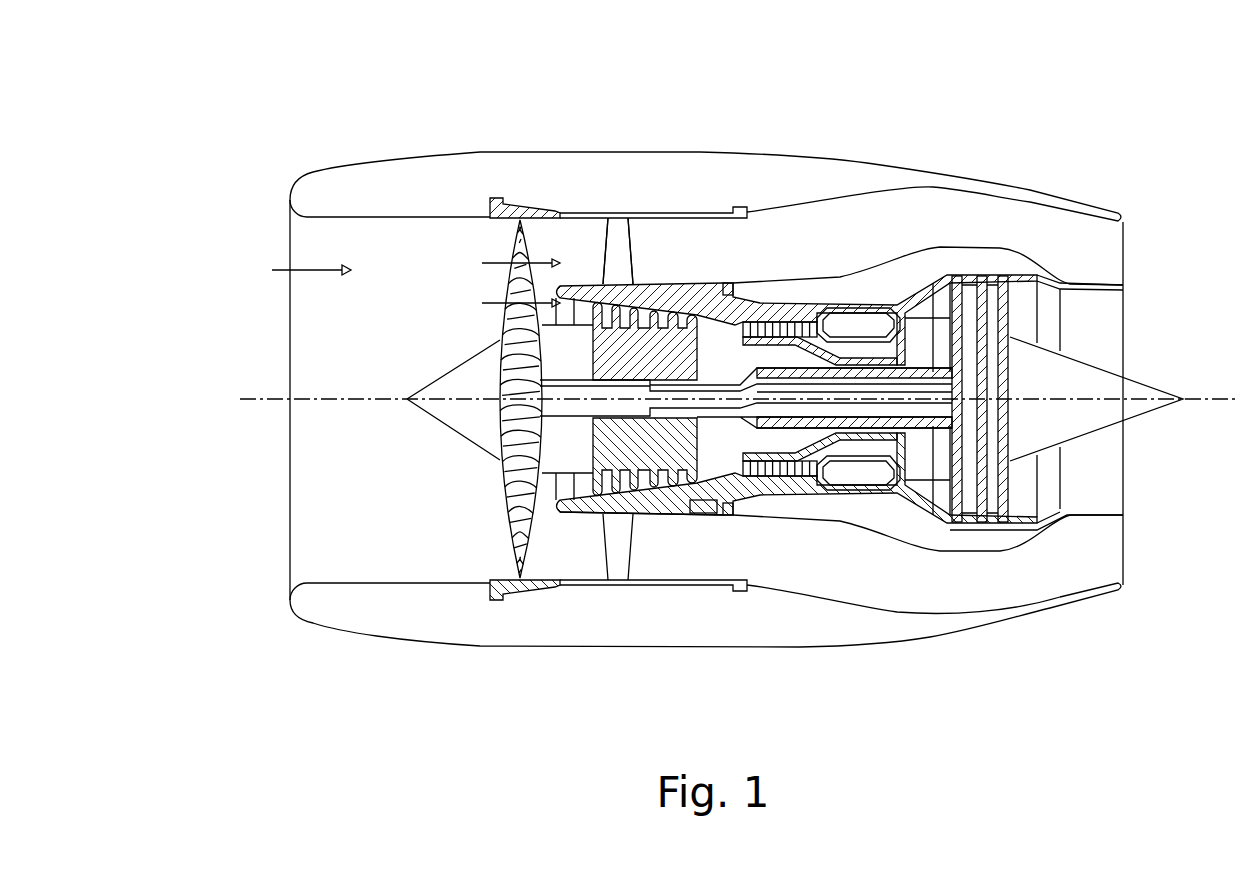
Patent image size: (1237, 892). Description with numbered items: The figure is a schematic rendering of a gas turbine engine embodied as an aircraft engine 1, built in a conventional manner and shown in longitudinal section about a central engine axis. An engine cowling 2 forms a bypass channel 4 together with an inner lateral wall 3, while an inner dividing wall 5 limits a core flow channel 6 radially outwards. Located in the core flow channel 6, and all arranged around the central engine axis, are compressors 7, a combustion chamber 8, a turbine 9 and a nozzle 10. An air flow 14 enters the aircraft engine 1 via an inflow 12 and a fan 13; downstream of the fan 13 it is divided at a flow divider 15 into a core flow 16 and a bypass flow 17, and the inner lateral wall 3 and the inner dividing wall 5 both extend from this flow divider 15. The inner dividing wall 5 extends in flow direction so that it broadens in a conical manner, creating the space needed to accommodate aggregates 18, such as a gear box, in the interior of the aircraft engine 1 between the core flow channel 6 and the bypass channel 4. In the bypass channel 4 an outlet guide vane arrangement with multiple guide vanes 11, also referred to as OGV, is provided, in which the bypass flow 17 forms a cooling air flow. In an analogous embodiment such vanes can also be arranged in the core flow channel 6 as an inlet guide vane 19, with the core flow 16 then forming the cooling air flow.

The aircraft engine 1 is at (232, 111).
The engine cowling 2 is at (390, 193).
The inner lateral wall 3 is at (820, 272).
The bypass channel 4 is at (685, 240).
The inner dividing wall 5 is at (793, 483).
The core flow channel 6 is at (728, 283).
The compressors 7 is at (747, 500).
The combustion chamber 8 is at (856, 470).
The turbine 9 is at (927, 283).
The nozzle 10 is at (1047, 327).
The guide vanes 11 is at (621, 240).
The inflow 12 is at (356, 248).
The fan 13 is at (526, 222).
The air flow 14 is at (303, 277).
The flow divider 15 is at (577, 520).
The core flow 16 is at (490, 313).
The bypass flow 17 is at (487, 262).
The aggregates 18 is at (703, 517).
The inlet guide vane 19 is at (567, 313).